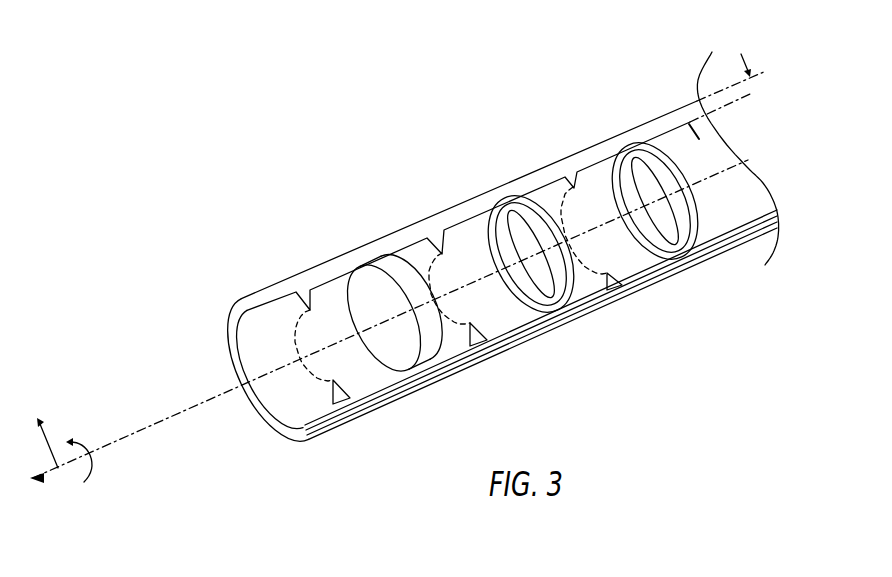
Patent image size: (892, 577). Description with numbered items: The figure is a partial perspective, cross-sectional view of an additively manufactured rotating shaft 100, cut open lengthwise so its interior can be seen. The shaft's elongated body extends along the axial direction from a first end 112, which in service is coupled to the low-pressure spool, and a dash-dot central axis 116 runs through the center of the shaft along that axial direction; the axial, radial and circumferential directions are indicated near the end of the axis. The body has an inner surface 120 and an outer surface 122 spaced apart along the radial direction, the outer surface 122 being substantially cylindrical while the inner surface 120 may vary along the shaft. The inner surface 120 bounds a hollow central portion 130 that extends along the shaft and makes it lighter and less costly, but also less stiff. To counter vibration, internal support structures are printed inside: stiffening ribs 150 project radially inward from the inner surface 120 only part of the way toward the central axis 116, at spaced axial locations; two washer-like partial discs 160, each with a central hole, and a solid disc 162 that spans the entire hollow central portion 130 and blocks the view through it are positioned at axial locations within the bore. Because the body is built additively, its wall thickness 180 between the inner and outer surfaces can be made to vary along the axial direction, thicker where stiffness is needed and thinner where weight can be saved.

The rotating shaft 100 is at (284, 168).
The first end 112 is at (315, 451).
The central axis 116 is at (196, 407).
The inner surface 120 is at (740, 156).
The outer surface 122 is at (654, 291).
The hollow central portion 130 is at (468, 240).
The stiffening ribs 150 is at (569, 177).
The partial discs 160 is at (522, 294).
The solid discs 162 is at (415, 350).
The wall thickness 180 is at (754, 95).